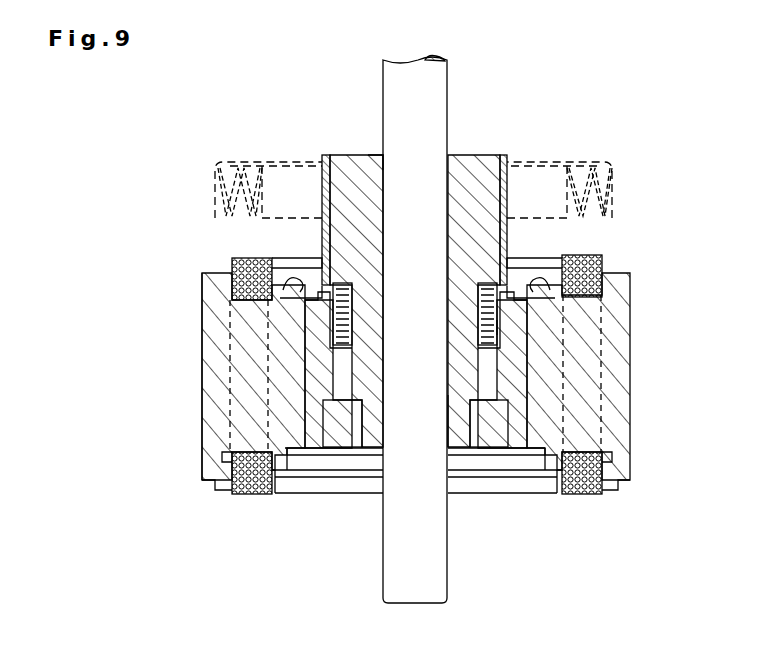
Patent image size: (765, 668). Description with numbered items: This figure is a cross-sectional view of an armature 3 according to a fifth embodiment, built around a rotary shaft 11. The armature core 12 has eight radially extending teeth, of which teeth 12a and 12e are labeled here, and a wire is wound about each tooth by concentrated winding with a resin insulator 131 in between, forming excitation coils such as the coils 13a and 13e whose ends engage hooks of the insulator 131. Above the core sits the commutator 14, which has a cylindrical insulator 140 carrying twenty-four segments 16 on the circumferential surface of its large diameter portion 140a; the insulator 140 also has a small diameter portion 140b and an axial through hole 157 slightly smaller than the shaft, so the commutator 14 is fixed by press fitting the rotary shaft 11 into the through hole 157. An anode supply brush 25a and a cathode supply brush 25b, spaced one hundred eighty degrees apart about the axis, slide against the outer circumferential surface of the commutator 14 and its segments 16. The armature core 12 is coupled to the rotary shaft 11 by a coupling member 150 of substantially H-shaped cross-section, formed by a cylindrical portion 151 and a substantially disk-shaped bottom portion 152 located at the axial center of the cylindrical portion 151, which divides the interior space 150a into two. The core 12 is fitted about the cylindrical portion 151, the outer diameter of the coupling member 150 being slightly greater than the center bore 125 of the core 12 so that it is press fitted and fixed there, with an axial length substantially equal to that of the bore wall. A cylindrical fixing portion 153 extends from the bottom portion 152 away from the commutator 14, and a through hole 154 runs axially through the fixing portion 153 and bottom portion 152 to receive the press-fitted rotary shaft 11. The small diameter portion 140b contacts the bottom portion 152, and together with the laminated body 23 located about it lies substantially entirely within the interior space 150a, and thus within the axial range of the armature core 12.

The armature 3 is at (570, 50).
The rotary shaft 11 is at (383, 588).
The armature core 12 is at (202, 344).
The tooth 12a is at (620, 306).
The tooth 12e is at (222, 446).
The excitation coil 13a is at (588, 495).
The excitation coil 13e is at (252, 495).
The resin insulator 131 is at (216, 486).
The commutator 14 is at (332, 155).
The cylindrical insulator 140 is at (462, 155).
The large diameter portion 140a is at (502, 155).
The small diameter portion 140b is at (332, 392).
The through hole 157 is at (380, 156).
The segment 16 is at (322, 237).
The laminated body 23 is at (316, 338).
The anode supply brush 25a is at (538, 163).
The cathode supply brush 25b is at (304, 160).
The center bore 125 is at (516, 400).
The coupling member 150 is at (478, 420).
The interior space 150a is at (500, 327).
The cylindrical portion 151 is at (342, 348).
The bottom portion 152 is at (492, 342).
The fixing portion 153 is at (346, 450).
The through hole 154 is at (440, 396).